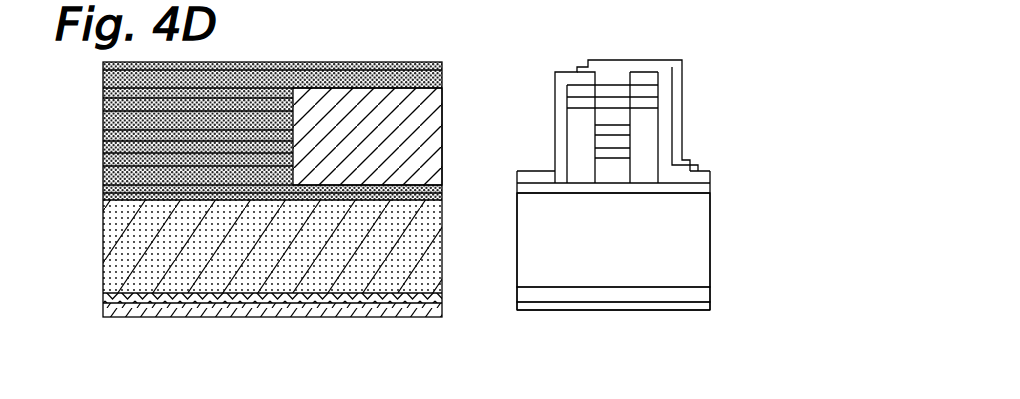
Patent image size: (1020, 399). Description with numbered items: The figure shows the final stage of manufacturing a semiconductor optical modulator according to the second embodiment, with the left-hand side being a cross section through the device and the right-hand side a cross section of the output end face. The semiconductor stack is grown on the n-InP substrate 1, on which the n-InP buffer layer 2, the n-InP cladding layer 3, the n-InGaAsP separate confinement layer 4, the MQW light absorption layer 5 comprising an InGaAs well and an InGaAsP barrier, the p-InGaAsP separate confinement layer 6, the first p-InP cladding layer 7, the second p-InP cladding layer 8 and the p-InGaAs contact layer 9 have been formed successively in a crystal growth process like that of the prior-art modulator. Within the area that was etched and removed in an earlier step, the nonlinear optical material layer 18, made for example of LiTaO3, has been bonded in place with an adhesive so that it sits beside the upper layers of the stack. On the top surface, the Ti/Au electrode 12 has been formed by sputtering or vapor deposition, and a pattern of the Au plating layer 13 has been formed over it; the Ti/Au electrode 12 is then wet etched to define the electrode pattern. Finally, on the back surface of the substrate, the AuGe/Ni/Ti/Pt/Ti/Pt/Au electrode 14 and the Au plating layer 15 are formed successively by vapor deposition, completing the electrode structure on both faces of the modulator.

The n-InP substrate 1 is at (517, 247).
The n-InP buffer layer 2 is at (518, 192).
The n-InP cladding layer 3 is at (103, 177).
The n-InGaAsP separate confinement layer 4 is at (103, 160).
The MQW light absorption layer 5 is at (103, 142).
The p-InGaAsP separate confinement layer 6 is at (103, 127).
The first p-InP cladding layer 7 is at (103, 110).
The second p-InP cladding layer 8 is at (246, 100).
The p-InGaAs contact layer 9 is at (221, 86).
The Ti/Au electrode 12 is at (440, 82).
The Au plating layer 13 is at (437, 65).
The AuGe/Ni/Ti/Pt/Ti/Pt/Au electrode 14 is at (635, 293).
The Au plating layer 15 is at (602, 306).
The nonlinear optical material layer 18 is at (430, 132).